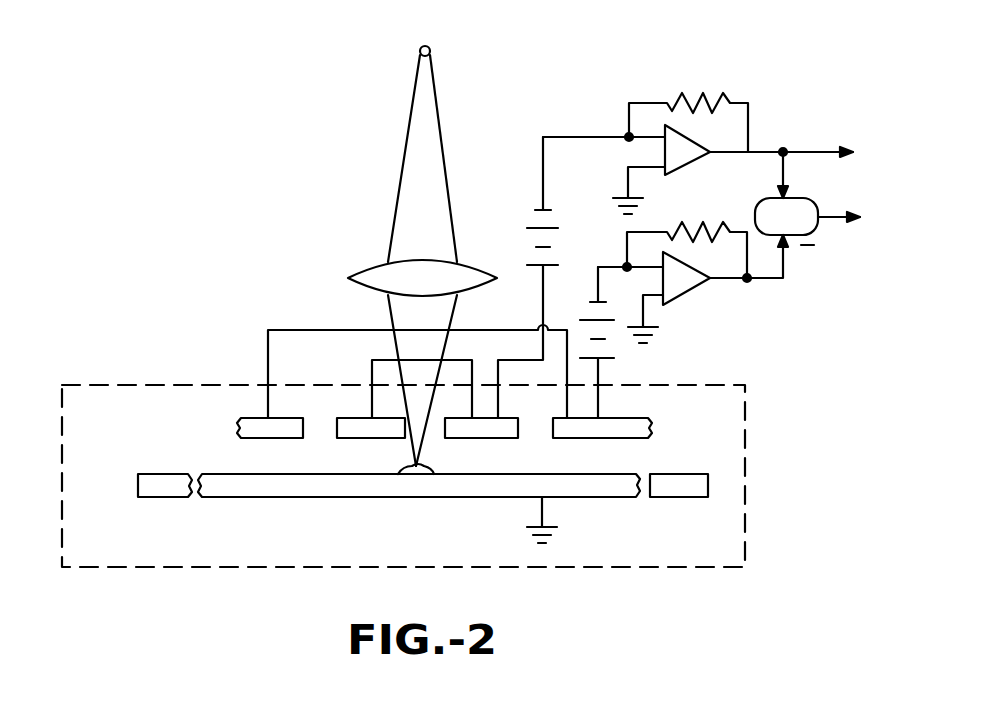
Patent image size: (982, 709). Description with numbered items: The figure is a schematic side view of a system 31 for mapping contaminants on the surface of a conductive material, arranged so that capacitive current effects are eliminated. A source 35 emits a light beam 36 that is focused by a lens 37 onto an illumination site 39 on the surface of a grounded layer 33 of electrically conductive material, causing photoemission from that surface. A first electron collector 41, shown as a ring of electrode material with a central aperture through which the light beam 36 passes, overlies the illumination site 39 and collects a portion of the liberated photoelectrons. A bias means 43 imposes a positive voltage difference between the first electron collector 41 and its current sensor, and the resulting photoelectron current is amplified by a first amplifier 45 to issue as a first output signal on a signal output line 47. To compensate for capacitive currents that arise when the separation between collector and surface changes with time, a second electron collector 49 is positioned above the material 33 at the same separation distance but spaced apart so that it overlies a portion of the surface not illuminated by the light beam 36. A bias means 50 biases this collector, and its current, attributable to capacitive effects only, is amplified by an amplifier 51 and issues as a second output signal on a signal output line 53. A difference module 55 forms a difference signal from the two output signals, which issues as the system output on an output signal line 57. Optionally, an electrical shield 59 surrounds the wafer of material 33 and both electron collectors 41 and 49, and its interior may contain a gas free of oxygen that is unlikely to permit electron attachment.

The system 31 is at (550, 80).
The grounded layer 33 is at (627, 487).
The source 35 is at (430, 48).
The light beam 36 is at (428, 133).
The lens 37 is at (373, 272).
The illumination site 39 is at (378, 473).
The first electron collector 41 is at (370, 442).
The bias means 43 is at (527, 228).
The first amplifier 45 is at (765, 112).
The signal output line 47 is at (810, 150).
The second electron collector 49 is at (272, 433).
The bias means 50 is at (588, 318).
The amplifier 51 is at (718, 300).
The signal output line 53 is at (728, 283).
The difference module 55 is at (793, 240).
The output signal line 57 is at (835, 228).
The electrical shield 59 is at (748, 527).